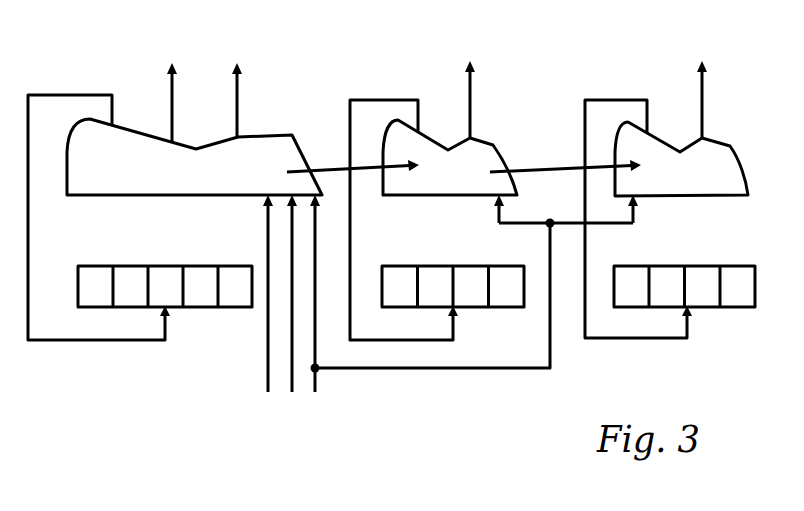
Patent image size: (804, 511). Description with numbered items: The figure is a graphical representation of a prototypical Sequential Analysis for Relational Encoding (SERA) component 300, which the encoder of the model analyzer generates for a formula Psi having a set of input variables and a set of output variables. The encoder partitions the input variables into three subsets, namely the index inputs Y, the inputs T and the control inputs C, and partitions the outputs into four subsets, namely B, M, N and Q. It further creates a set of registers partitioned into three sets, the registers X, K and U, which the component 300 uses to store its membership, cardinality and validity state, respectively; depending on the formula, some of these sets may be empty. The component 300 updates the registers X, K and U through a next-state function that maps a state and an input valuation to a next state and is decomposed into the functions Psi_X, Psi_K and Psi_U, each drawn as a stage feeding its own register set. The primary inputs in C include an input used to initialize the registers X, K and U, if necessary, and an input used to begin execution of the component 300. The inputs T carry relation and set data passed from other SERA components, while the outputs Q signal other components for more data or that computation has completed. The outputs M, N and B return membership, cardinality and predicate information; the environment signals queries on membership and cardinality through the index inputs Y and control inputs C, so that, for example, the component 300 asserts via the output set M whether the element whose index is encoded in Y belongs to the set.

The SERA component 300 is at (535, 43).
The register set X is at (165, 301).
The register set K is at (453, 301).
The register set U is at (684, 301).
The output subset B is at (171, 89).
The output subset M is at (237, 87).
The output subset N is at (470, 86).
The output subset Q is at (701, 86).
The index inputs Y is at (266, 309).
The input subset T is at (290, 309).
The control inputs C is at (472, 309).